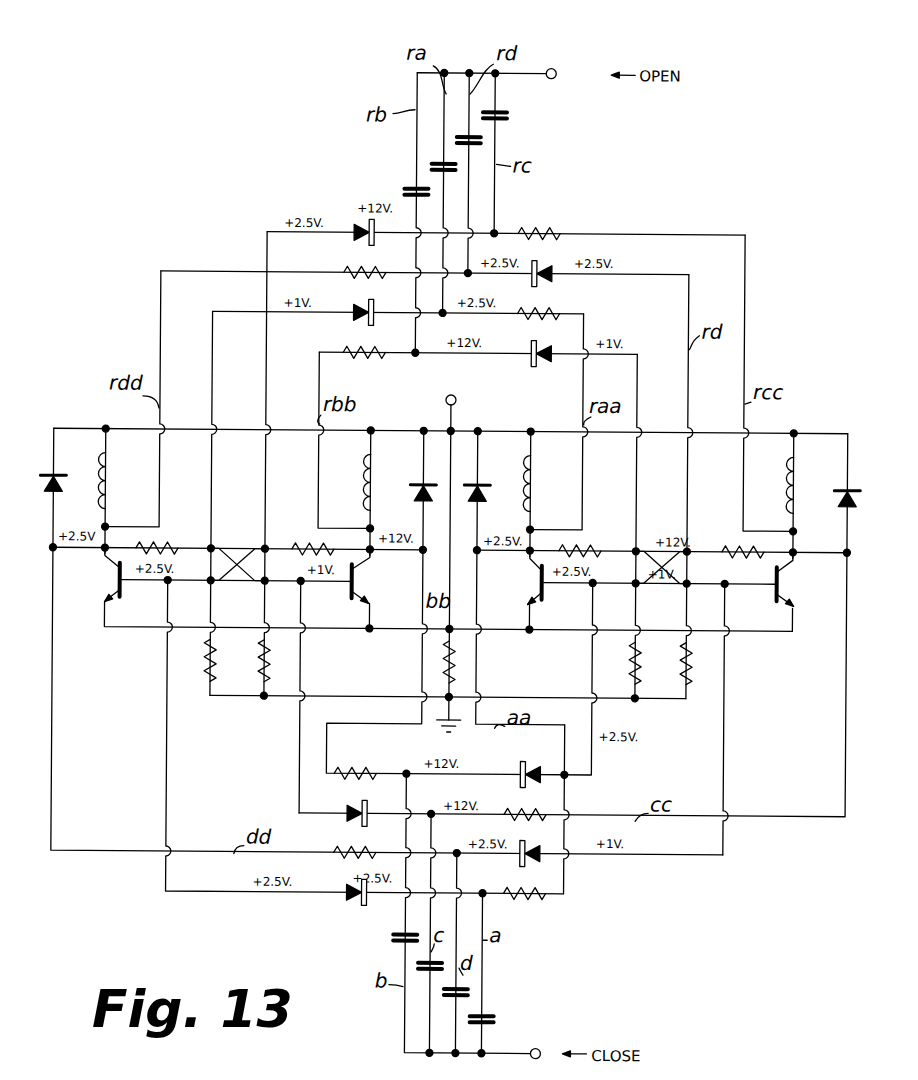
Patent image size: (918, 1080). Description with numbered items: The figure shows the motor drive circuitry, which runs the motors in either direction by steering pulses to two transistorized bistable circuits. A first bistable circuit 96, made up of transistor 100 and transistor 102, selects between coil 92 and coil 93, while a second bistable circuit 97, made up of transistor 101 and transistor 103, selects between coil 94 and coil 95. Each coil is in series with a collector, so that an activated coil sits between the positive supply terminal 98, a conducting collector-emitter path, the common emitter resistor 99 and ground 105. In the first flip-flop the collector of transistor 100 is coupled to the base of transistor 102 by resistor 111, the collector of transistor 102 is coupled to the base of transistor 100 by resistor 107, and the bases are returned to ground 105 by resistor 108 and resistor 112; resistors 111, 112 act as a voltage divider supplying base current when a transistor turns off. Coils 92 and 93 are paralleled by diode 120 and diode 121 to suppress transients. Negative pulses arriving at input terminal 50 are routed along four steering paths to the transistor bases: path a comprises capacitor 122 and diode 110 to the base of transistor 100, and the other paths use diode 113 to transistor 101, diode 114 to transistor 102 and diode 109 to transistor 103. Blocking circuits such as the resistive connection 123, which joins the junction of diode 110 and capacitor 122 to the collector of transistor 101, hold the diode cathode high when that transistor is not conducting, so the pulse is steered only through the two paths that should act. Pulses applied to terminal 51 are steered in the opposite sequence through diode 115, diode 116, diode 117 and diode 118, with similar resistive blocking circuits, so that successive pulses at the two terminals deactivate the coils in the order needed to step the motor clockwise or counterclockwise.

The input terminal 50 is at (543, 1050).
The terminal 51 is at (553, 73).
The coil 92 is at (112, 490).
The coil 93 is at (376, 490).
The coil 94 is at (536, 483).
The coil 95 is at (786, 485).
The transistorized bistable circuit 96 is at (240, 546).
The transistorized bistable circuit 97 is at (664, 546).
The positive supply terminal 98 is at (444, 400).
The common emitter resistor 99 is at (454, 657).
The transistor 100 is at (114, 585).
The transistor 101 is at (620, 585).
The transistor 102 is at (358, 585).
The transistor 103 is at (776, 585).
The ground 105 is at (456, 710).
The resistor 107 is at (310, 542).
The resistor 108 is at (208, 686).
The diode 109 is at (520, 858).
The diode 110 is at (350, 898).
The resistor 111 is at (166, 544).
The resistor 112 is at (271, 658).
The diode 113 is at (522, 777).
The diode 114 is at (360, 817).
The diode 115 is at (354, 237).
The diode 116 is at (524, 357).
The diode 117 is at (542, 277).
The diode 118 is at (354, 317).
The diode 120 is at (58, 478).
The diode 121 is at (424, 493).
The capacitor 122 is at (486, 1016).
The resistive connection 123 is at (524, 897).